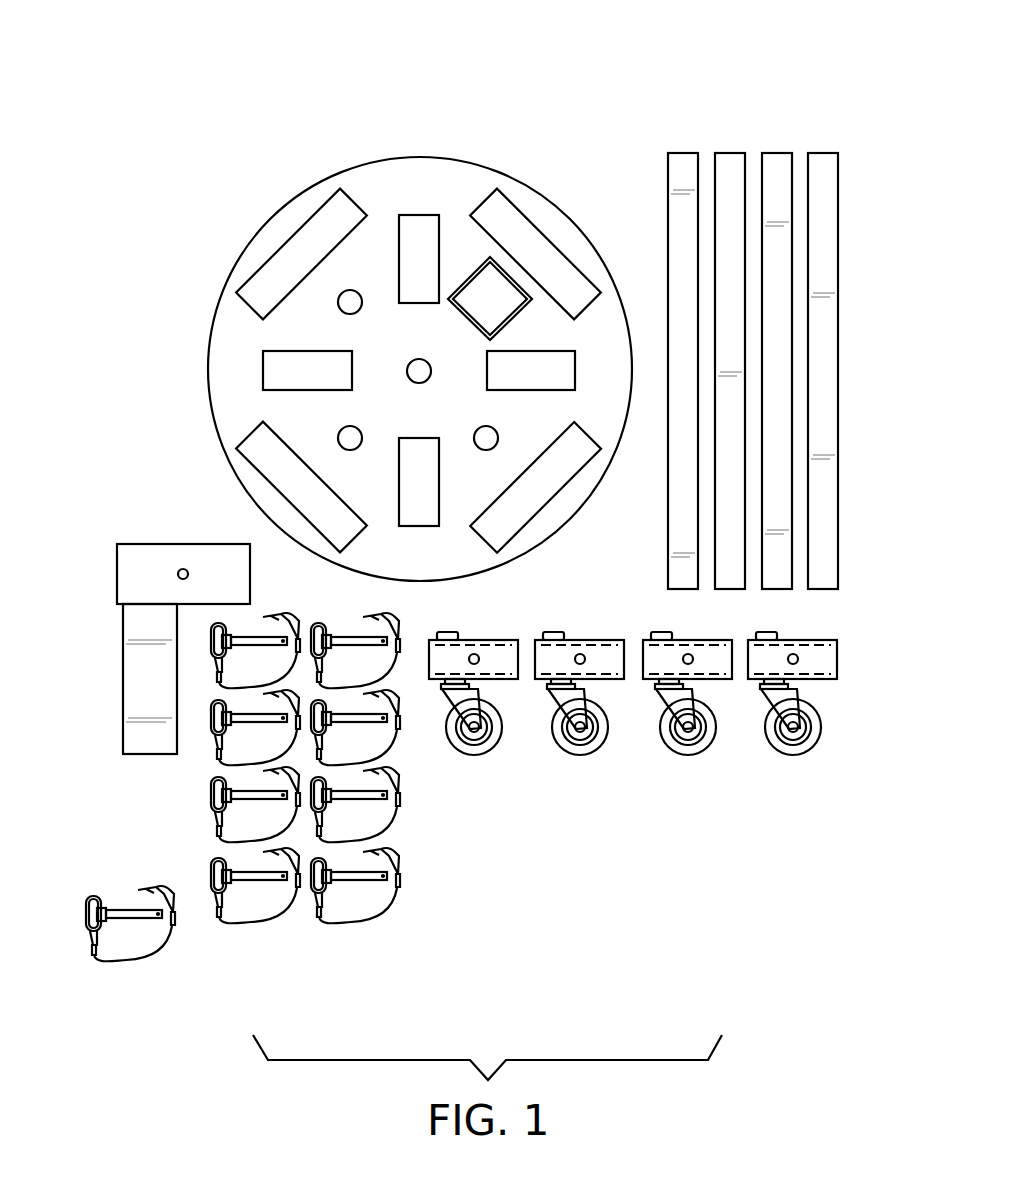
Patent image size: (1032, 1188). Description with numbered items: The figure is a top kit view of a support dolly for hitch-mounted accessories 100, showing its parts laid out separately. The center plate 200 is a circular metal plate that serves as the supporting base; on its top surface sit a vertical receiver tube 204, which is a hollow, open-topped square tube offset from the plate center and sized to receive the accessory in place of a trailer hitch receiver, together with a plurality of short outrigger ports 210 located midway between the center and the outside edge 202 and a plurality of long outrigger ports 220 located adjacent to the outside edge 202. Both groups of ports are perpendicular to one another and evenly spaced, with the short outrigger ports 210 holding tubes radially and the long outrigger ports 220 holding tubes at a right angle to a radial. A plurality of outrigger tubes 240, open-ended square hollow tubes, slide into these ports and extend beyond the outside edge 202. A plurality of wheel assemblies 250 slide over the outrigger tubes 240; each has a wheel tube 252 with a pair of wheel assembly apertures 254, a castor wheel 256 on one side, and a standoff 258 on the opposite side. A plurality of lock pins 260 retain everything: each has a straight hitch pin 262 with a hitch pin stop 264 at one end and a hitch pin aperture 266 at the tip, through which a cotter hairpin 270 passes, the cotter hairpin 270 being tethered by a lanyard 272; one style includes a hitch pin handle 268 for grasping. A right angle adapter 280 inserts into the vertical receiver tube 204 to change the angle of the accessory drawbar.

The support dolly for hitch-mounted accessories 100 is at (118, 100).
The center plate 200 is at (352, 168).
The outside edge 202 is at (214, 320).
The vertical receiver tube 204 is at (503, 268).
The short outrigger ports 210 is at (420, 215).
The long outrigger ports 220 is at (283, 240).
The outrigger tubes 240 is at (822, 153).
The wheel assemblies 250 is at (857, 628).
The wheel tube 252 is at (601, 723).
The wheel assembly apertures 254 is at (542, 730).
The castor wheel 256 is at (580, 764).
The standoff 258 is at (573, 591).
The lock pins 260 is at (123, 897).
The hitch pin 262 is at (268, 946).
The hitch pin stop 264 is at (208, 921).
The hitch pin aperture 266 is at (292, 916).
The hitch pin handle 268 is at (78, 913).
The cotter hairpin 270 is at (431, 858).
The lanyard 272 is at (393, 920).
The right angle adapter 280 is at (117, 582).